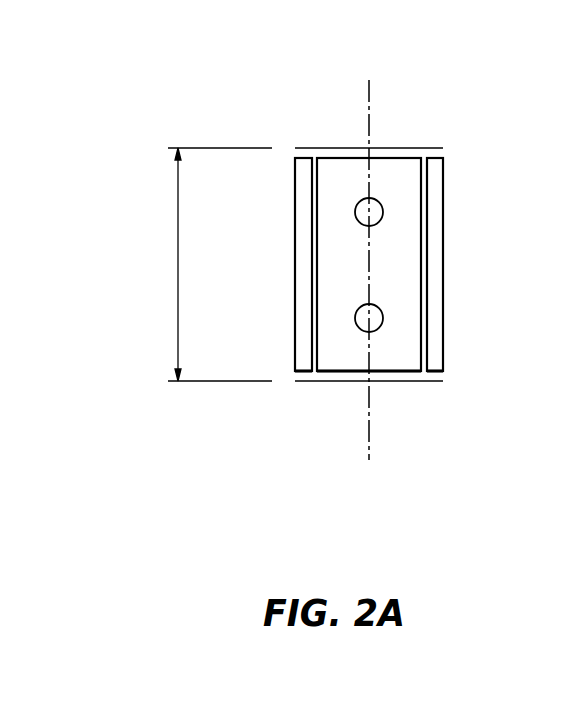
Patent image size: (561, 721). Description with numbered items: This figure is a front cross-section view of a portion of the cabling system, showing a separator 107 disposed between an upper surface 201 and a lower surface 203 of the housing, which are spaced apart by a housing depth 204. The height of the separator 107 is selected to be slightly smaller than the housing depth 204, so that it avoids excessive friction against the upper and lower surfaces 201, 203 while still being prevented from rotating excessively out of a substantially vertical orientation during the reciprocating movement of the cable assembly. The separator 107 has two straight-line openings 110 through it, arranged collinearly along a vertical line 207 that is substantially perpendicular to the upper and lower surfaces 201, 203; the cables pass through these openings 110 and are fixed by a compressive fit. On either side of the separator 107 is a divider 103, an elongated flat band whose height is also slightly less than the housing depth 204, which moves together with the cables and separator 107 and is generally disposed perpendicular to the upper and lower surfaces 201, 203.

The divider 103 is at (293, 348).
The separator 107 is at (410, 243).
The opening 110 is at (378, 202).
The upper surface 201 is at (355, 148).
The lower surface 203 is at (355, 381).
The housing depth 204 is at (178, 262).
The vertical line 207 is at (372, 91).